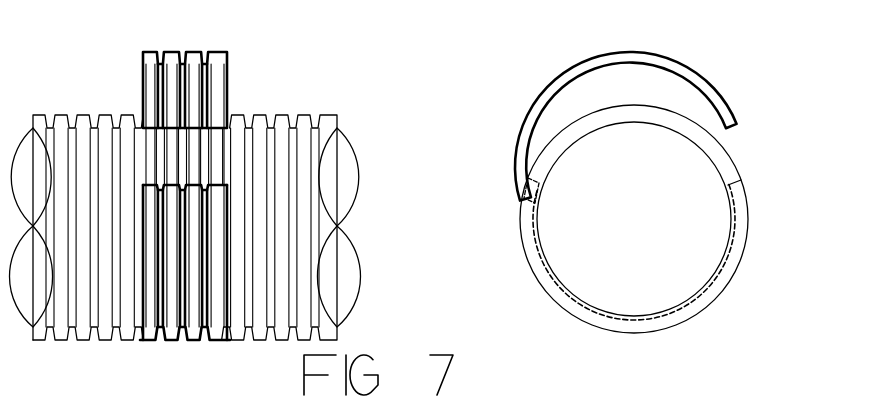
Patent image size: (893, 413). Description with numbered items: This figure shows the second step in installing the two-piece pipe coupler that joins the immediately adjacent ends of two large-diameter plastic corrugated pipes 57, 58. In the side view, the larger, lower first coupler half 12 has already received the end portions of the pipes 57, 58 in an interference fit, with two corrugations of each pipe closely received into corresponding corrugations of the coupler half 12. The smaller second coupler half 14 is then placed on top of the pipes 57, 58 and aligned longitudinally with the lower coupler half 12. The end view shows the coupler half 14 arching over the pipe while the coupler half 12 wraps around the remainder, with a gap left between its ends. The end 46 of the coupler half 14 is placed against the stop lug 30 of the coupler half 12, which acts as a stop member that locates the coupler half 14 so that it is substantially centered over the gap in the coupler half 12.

The first coupler half 12 is at (172, 342).
The second coupler half 14 is at (230, 65).
The stop lug 30 is at (522, 202).
The end of the coupler half 46 is at (531, 201).
The corrugated pipe 57 is at (60, 115).
The corrugated pipe 58 is at (305, 114).